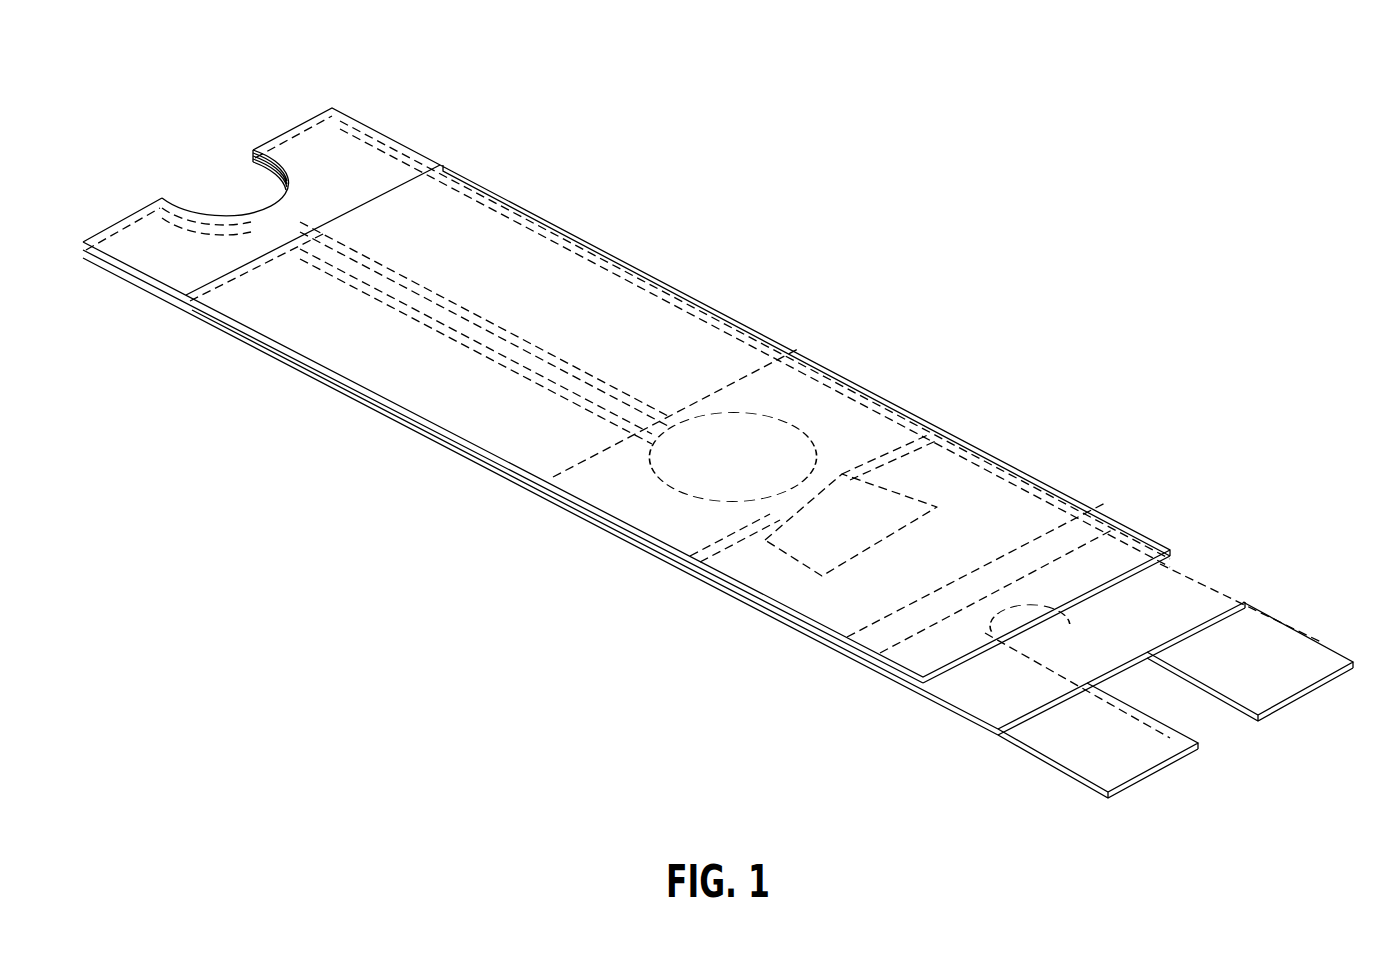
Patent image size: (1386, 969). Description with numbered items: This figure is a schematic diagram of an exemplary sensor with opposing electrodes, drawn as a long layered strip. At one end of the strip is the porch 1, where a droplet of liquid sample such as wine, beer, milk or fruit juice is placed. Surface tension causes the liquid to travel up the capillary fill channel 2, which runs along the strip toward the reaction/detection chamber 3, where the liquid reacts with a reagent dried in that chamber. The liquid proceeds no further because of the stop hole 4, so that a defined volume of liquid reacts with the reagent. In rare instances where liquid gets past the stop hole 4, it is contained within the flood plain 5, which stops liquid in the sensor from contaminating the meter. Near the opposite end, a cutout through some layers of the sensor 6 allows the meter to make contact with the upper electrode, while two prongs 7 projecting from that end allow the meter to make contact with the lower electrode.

The porch 1 is at (230, 193).
The capillary fill channel 2 is at (393, 282).
The reaction/detection chamber 3 is at (733, 458).
The stop hole 4 is at (845, 520).
The flood plain 5 is at (930, 562).
The cutout through some layers of the sensor 6 is at (1076, 640).
The prongs 7 is at (1255, 652).